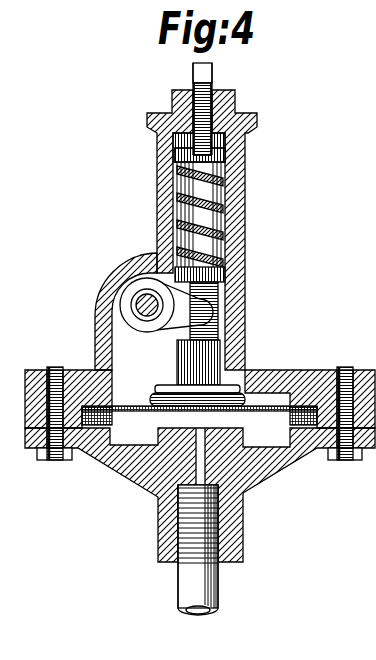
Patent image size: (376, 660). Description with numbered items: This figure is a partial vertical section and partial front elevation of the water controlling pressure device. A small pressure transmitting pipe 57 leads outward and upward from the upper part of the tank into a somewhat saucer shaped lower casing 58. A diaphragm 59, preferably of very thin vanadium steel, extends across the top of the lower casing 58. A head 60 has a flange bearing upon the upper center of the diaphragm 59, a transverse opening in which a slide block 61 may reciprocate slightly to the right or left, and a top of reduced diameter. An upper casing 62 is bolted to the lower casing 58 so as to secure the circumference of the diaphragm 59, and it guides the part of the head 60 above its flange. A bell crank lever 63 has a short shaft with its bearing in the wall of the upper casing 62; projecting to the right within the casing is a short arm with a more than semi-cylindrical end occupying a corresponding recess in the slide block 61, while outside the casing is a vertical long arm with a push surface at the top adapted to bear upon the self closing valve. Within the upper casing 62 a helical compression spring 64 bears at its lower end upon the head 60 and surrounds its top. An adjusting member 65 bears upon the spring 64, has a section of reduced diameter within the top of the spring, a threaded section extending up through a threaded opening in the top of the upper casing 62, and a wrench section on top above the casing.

The pressure transmitting pipe 57 is at (218, 592).
The lower casing 58 is at (265, 475).
The diaphragm 59 is at (134, 408).
The head 60 is at (246, 368).
The slide block 61 is at (245, 324).
The upper casing 62 is at (245, 200).
The bell crank lever 63 is at (245, 292).
The helical compression spring 64 is at (222, 235).
The adjusting member 65 is at (225, 160).